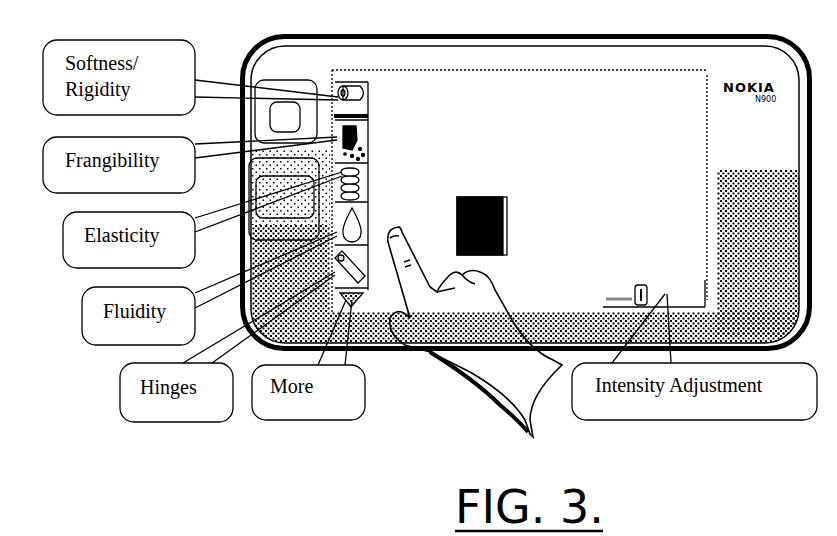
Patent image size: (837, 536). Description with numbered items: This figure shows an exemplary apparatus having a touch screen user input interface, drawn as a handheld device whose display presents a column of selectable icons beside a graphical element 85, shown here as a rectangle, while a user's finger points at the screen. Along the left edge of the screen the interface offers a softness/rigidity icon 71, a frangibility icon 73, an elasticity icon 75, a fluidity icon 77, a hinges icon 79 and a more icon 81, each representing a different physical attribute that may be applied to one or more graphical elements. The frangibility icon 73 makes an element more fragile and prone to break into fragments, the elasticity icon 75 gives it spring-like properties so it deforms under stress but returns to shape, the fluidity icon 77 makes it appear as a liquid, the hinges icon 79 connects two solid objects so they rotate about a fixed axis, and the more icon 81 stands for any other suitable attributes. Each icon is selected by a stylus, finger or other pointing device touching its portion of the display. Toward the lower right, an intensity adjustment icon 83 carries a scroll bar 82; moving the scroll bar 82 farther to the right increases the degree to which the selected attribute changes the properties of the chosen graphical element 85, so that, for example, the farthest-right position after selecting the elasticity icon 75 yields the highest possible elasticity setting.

The softness/rigidity icon 71 is at (381, 96).
The frangibility icon 73 is at (385, 139).
The elasticity icon 75 is at (384, 179).
The fluidity icon 77 is at (386, 218).
The hinges icon 79 is at (396, 328).
The more icon 81 is at (389, 362).
The scroll bar 82 is at (610, 279).
The intensity adjustment icon 83 is at (655, 275).
The graphical element 85 is at (510, 218).